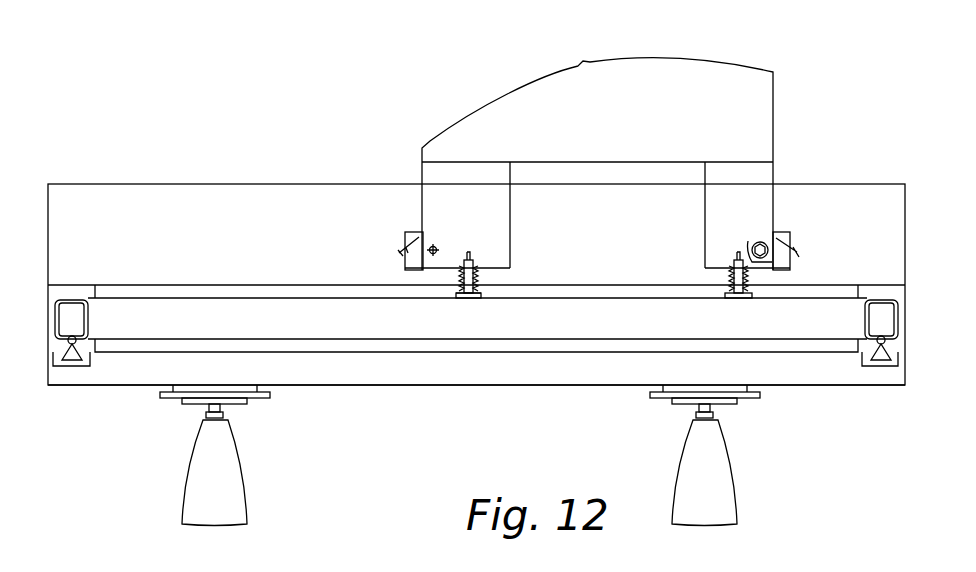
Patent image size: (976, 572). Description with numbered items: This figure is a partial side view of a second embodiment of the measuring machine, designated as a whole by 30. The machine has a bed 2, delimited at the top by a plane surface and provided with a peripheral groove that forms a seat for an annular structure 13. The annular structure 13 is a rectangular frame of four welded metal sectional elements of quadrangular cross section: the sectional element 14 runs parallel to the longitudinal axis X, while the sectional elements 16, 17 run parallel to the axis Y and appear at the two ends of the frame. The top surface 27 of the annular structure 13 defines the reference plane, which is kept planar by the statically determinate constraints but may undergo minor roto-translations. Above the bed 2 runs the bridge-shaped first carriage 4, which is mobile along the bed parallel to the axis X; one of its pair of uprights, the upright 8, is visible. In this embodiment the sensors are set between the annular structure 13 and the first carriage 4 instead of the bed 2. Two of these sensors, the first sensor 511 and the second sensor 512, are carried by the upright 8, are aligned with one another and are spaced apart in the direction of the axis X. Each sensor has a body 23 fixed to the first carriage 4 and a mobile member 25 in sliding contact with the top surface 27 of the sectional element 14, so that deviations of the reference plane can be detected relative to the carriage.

The bed 2 is at (307, 212).
The first carriage 4 is at (781, 102).
The upright 8 is at (748, 135).
The annular structure 13 is at (384, 340).
The sectional element 14 is at (553, 325).
The sectional element 16 is at (57, 320).
The sectional element 17 is at (895, 325).
The body 23 is at (467, 262).
The mobile member 25 is at (465, 298).
The top surface 27 is at (178, 297).
The second embodiment of the measuring machine 30 is at (214, 150).
The sensor S11 511 is at (480, 298).
The sensor S12 512 is at (740, 298).